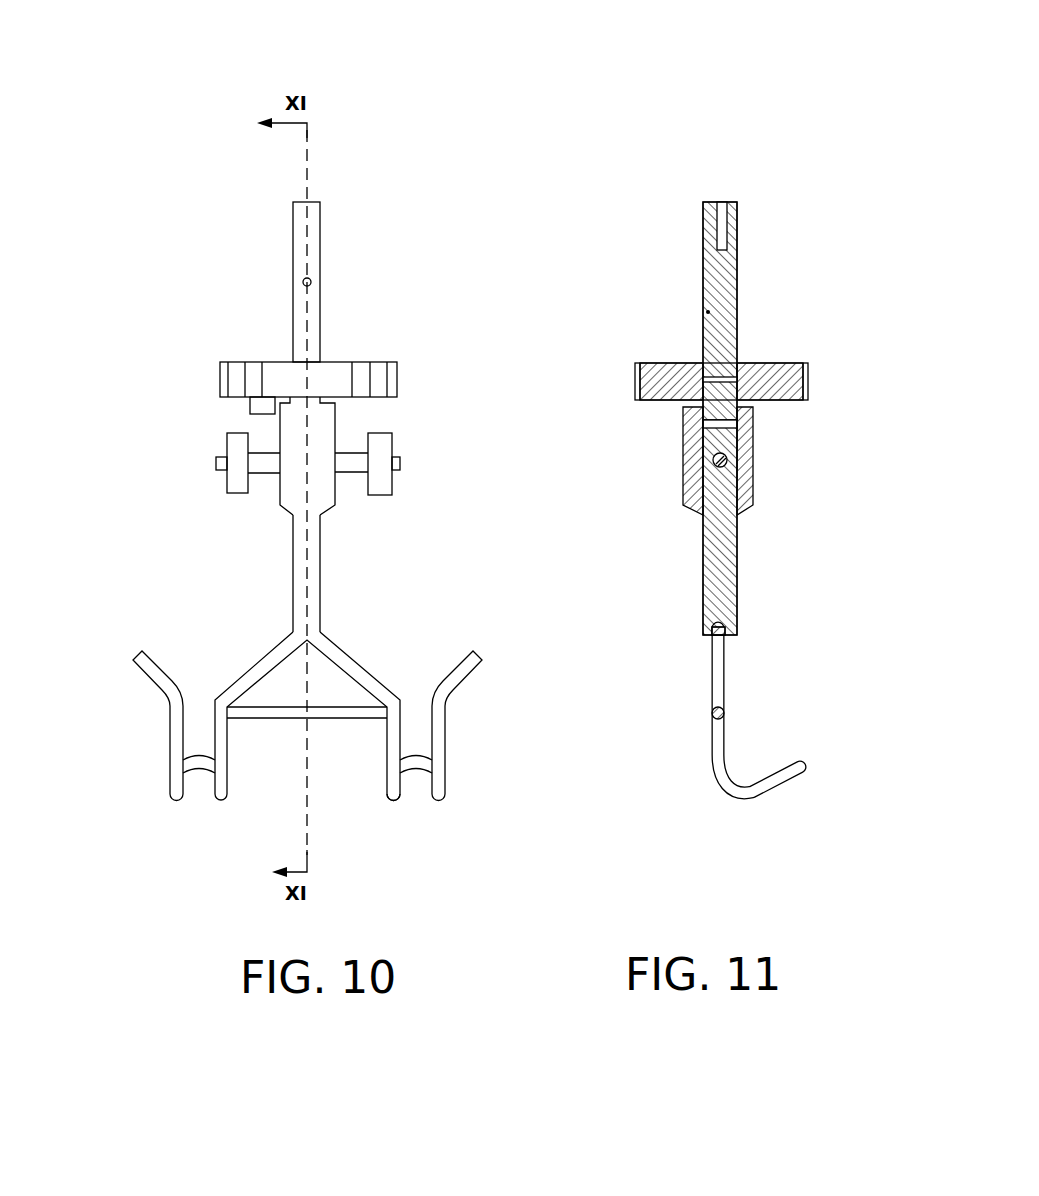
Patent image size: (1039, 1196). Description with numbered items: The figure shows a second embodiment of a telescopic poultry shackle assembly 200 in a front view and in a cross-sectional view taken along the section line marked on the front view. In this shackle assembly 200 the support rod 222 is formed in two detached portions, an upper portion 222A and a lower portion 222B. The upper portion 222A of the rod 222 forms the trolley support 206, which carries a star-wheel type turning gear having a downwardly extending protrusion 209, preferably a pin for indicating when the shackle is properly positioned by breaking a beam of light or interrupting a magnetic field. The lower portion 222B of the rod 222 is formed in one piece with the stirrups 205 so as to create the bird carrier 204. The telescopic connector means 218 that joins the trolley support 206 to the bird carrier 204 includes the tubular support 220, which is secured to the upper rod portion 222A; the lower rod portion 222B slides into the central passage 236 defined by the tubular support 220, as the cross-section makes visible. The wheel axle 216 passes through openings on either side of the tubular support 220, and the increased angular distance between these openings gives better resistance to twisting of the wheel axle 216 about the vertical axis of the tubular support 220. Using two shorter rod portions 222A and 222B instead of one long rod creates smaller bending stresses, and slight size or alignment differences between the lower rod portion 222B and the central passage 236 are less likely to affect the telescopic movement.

In FIG. 10, the shackle assembly 200 is at (180, 58).
In FIG. 11, the shackle assembly 200 is at (812, 211).
In FIG. 10, the bird carrier 204 is at (112, 741).
In FIG. 10, the stirrups 205 is at (397, 794).
In FIG. 11, the stirrups 205 is at (742, 797).
In FIG. 10, the trolley support 206 is at (285, 234).
In FIG. 10, the protrusion 209 is at (250, 406).
In FIG. 10, the wheel axle 216 is at (218, 462).
In FIG. 11, the wheel axle 216 is at (683, 465).
In FIG. 10, the telescopic connector means 218 is at (350, 523).
In FIG. 10, the tubular support 220 is at (335, 433).
In FIG. 11, the tubular support 220 is at (753, 505).
In FIG. 11, the support rod 222 is at (683, 332).
In FIG. 11, the upper portion of the rod 222A is at (730, 332).
In FIG. 11, the lower portion of the rod 222B is at (723, 558).
In FIG. 11, the central passage 236 is at (753, 418).